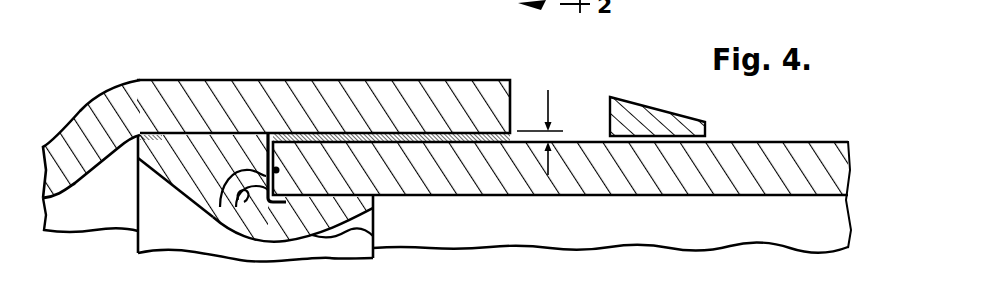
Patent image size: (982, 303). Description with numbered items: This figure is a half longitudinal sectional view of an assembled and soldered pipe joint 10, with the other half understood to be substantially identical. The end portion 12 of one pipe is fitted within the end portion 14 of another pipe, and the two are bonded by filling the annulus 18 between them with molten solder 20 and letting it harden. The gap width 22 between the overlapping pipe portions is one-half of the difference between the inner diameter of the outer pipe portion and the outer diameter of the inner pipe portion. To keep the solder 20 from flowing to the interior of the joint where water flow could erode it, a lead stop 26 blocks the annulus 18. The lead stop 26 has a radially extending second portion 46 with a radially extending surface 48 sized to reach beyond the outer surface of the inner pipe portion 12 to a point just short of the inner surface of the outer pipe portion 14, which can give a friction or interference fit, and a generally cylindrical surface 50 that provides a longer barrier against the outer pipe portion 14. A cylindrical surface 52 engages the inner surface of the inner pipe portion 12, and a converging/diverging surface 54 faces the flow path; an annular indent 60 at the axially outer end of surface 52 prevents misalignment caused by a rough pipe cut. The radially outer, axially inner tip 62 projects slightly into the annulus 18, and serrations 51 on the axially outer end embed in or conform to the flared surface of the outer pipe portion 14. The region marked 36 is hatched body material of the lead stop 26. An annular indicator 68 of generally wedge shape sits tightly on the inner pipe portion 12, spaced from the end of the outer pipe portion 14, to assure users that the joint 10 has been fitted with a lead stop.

The pipe joint 10 is at (276, 56).
The end portion of one pipe 12 is at (795, 141).
The end portion of another pipe 14 is at (323, 76).
The annulus 18 is at (467, 133).
The solder 20 is at (410, 133).
The gap width 22 is at (548, 90).
The lead stop 26 is at (376, 237).
The hatched body 36 is at (255, 176).
The radially extending second portion 46 is at (240, 222).
The radially extending surface 48 is at (215, 212).
The cylindrical surface 50 is at (125, 120).
The serrations 51 is at (138, 80).
The cylindrical surface 52 is at (377, 203).
The converging/diverging surface 54 is at (297, 260).
The annular indent 60 is at (267, 242).
The radially outer and axially inner tip 62 is at (268, 136).
The annular indicator 68 is at (657, 115).